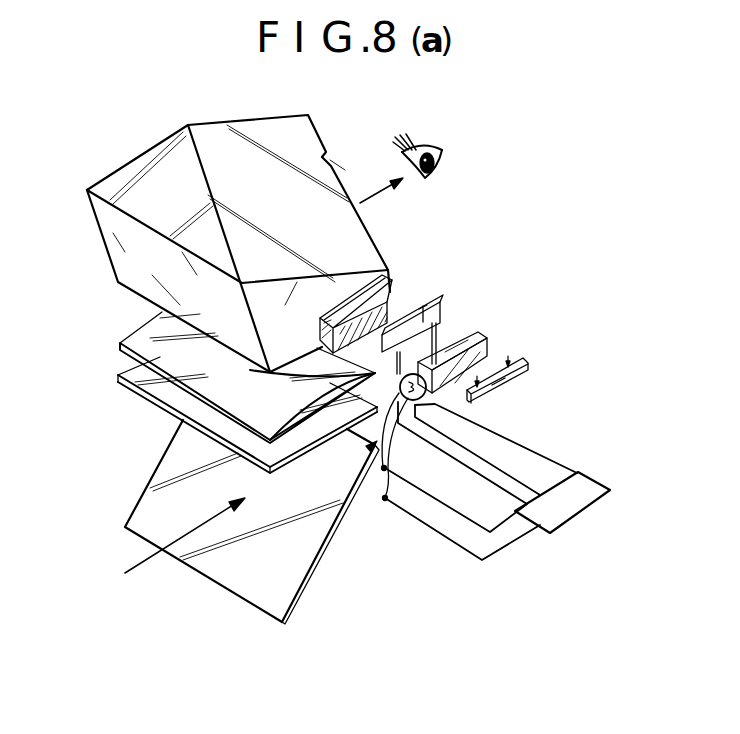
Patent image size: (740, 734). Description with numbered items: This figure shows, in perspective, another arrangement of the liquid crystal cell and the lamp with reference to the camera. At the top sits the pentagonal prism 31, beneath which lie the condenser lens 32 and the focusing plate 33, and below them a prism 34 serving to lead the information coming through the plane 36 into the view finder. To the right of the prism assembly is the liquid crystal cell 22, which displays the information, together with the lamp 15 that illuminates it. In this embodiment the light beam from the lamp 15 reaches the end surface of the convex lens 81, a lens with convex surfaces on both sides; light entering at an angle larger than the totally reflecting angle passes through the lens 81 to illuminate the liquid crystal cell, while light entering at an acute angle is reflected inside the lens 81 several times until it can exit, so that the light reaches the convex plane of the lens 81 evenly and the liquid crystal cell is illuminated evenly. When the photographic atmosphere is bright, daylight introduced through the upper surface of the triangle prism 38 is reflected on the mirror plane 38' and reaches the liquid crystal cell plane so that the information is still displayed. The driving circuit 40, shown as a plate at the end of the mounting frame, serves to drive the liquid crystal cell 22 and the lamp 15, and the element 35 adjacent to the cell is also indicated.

The pentagonal prism 31 is at (111, 261).
The condenser lens 32 is at (120, 346).
The focusing plate 33 is at (150, 399).
The prism 34 is at (148, 533).
The light source element 35 is at (388, 308).
The plane 36 is at (392, 278).
The liquid crystal cell 22 is at (443, 302).
The lamp 15 is at (418, 404).
The convex lens 81 is at (488, 338).
The triangle prism 38 is at (516, 379).
The mirror plane 38' is at (528, 400).
The driving circuit 40 is at (567, 512).